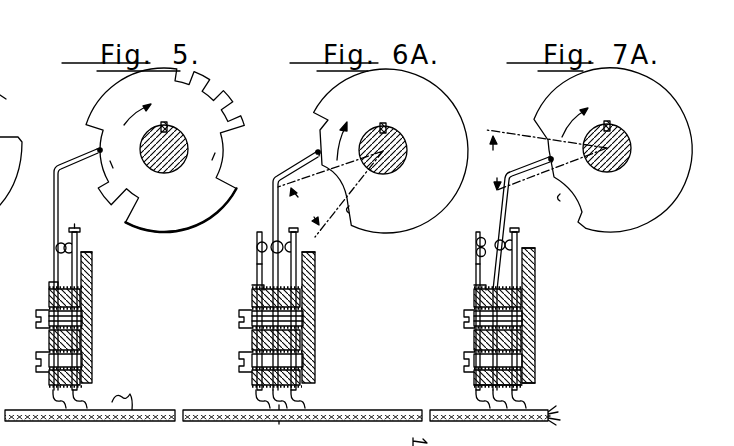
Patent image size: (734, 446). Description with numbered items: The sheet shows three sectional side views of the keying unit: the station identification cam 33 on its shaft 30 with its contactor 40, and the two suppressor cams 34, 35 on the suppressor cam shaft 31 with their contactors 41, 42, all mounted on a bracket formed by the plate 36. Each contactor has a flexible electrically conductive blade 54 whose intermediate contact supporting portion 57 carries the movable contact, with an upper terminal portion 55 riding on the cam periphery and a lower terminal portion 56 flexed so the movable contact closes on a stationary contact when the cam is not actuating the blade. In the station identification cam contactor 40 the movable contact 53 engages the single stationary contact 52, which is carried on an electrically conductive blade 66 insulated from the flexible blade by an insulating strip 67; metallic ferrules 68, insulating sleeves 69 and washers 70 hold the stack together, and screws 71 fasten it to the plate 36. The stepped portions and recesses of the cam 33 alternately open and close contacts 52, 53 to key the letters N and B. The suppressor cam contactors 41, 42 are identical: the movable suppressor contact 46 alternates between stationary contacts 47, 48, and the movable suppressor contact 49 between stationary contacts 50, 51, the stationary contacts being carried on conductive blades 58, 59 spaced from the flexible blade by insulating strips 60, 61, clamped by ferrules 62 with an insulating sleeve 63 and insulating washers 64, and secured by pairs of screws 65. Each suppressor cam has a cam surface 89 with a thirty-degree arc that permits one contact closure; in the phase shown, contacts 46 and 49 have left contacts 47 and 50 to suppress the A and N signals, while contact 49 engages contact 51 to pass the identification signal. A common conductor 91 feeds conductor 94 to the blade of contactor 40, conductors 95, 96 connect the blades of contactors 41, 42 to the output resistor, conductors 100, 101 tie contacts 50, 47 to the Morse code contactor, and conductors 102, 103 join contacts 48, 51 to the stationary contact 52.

In FIG. 5, the shaft 30 is at (157, 178).
In FIG. 6A, the suppressor cam shaft 31 is at (408, 146).
In FIG. 7A, the suppressor cam shaft 31 is at (627, 141).
In FIG. 5, the station identification cam 33 is at (183, 232).
In FIG. 6A, the suppressor cam 34 is at (435, 98).
In FIG. 7A, the suppressor cam 35 is at (664, 98).
In FIG. 5, the plate 36 is at (85, 300).
In FIG. 6A, the plate 36 is at (316, 286).
In FIG. 7A, the plate 36 is at (536, 253).
In FIG. 5, the station identification cam contactor 40 is at (50, 283).
In FIG. 6A, the suppressor cam contactor 41 is at (254, 288).
In FIG. 7A, the suppressor cam contactor 42 is at (476, 282).
In FIG. 6A, the movable suppressor contact 46 is at (261, 232).
In FIG. 6A, the stationary contact 47 is at (256, 246).
In FIG. 6A, the stationary contact 48 is at (298, 244).
In FIG. 7A, the movable suppressor contact 49 is at (488, 230).
In FIG. 7A, the stationary contact 50 is at (476, 243).
In FIG. 7A, the stationary contact 51 is at (519, 233).
In FIG. 5, the stationary contact 52 is at (80, 236).
In FIG. 5, the movable contact 53 is at (56, 247).
In FIG. 5, the flexible electrically conductive blade 54 is at (54, 204).
In FIG. 6A, the flexible electrically conductive blade 54 is at (273, 185).
In FIG. 7A, the flexible electrically conductive blade 54 is at (504, 205).
In FIG. 5, the upper terminal portion 55 is at (74, 161).
In FIG. 6A, the upper terminal portion 55 is at (289, 163).
In FIG. 7A, the upper terminal portion 55 is at (524, 164).
In FIG. 5, the lower terminal portion 56 is at (49, 293).
In FIG. 6A, the lower terminal portion 56 is at (300, 301).
In FIG. 7A, the lower terminal portion 56 is at (522, 290).
In FIG. 5, the intermediate contact supporting portion 57 is at (54, 222).
In FIG. 6A, the intermediate contact supporting portion 57 is at (273, 203).
In FIG. 7A, the intermediate contact supporting portion 57 is at (512, 211).
In FIG. 6A, the electrically conductive blade 58 is at (258, 267).
In FIG. 7A, the electrically conductive blade 58 is at (476, 264).
In FIG. 6A, the electrically conductive blade 59 is at (312, 269).
In FIG. 7A, the electrically conductive blade 59 is at (520, 270).
In FIG. 6A, the insulating strip 60 is at (252, 305).
In FIG. 7A, the insulating strip 60 is at (474, 299).
In FIG. 6A, the insulating strip 61 is at (316, 337).
In FIG. 7A, the insulating strip 61 is at (520, 337).
In FIG. 7A, the metallic ferrule 62 is at (530, 313).
In FIG. 6A, the insulating sleeve 63 is at (252, 379).
In FIG. 7A, the insulating sleeve 63 is at (474, 361).
In FIG. 7A, the insulating washer 64 is at (535, 374).
In FIG. 6A, the screws 65 is at (245, 350).
In FIG. 7A, the screws 65 is at (468, 350).
In FIG. 5, the electrically conductive blade 66 is at (93, 276).
In FIG. 5, the insulating strip 67 is at (49, 385).
In FIG. 5, the metallic ferrule 68 is at (80, 321).
In FIG. 5, the insulating sleeve 69 is at (36, 320).
In FIG. 5, the insulating washer 70 is at (49, 308).
In FIG. 5, the screws 71 is at (45, 348).
In FIG. 6A, the cam surface 89 is at (352, 209).
In FIG. 7A, the cam surface 89 is at (563, 197).
In FIG. 7A, the common conductor 91 is at (555, 420).
In FIG. 5, the conductor 94 is at (55, 400).
In FIG. 6A, the conductor 95 is at (285, 423).
In FIG. 7A, the conductor 95 is at (557, 405).
In FIG. 7A, the conductor 96 is at (542, 416).
In FIG. 7A, the conductor 100 is at (478, 399).
In FIG. 6A, the conductor 101 is at (258, 398).
In FIG. 6A, the conductor 102 is at (302, 403).
In FIG. 7A, the conductor 102 is at (521, 404).
In FIG. 5, the conductor 103 is at (113, 398).